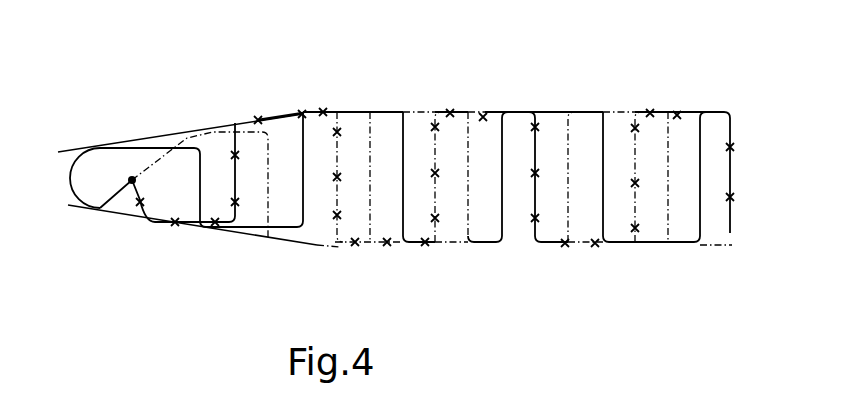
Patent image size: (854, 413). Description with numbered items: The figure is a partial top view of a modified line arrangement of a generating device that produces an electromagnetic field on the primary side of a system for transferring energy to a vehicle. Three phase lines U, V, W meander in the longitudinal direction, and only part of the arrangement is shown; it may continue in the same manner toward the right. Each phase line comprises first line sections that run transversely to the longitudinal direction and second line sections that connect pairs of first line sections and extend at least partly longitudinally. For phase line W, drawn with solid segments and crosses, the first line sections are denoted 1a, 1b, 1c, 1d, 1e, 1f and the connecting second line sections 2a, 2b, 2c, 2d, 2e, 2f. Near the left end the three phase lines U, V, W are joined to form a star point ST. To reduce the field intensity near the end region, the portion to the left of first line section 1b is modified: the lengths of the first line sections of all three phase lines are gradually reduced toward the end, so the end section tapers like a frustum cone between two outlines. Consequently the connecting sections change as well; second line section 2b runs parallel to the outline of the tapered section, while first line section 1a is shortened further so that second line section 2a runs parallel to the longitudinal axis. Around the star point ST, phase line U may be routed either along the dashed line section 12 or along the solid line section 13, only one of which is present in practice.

The solid line section 13 is at (72, 165).
The dashed line section 12 is at (134, 177).
The star point ST is at (130, 181).
The first line section 1a is at (233, 187).
The first line section 1b is at (340, 163).
The first line section 1c is at (437, 187).
The first line section 1d is at (537, 190).
The first line section 1e is at (637, 197).
The first line section 1f is at (732, 167).
The second line section 2a is at (176, 223).
The second line section 2b is at (289, 113).
The second line section 2c is at (380, 245).
The second line section 2d is at (486, 112).
The second line section 2e is at (582, 245).
The second line section 2f is at (683, 112).
The phase line U is at (110, 147).
The phase line V is at (234, 152).
The phase line W is at (176, 224).